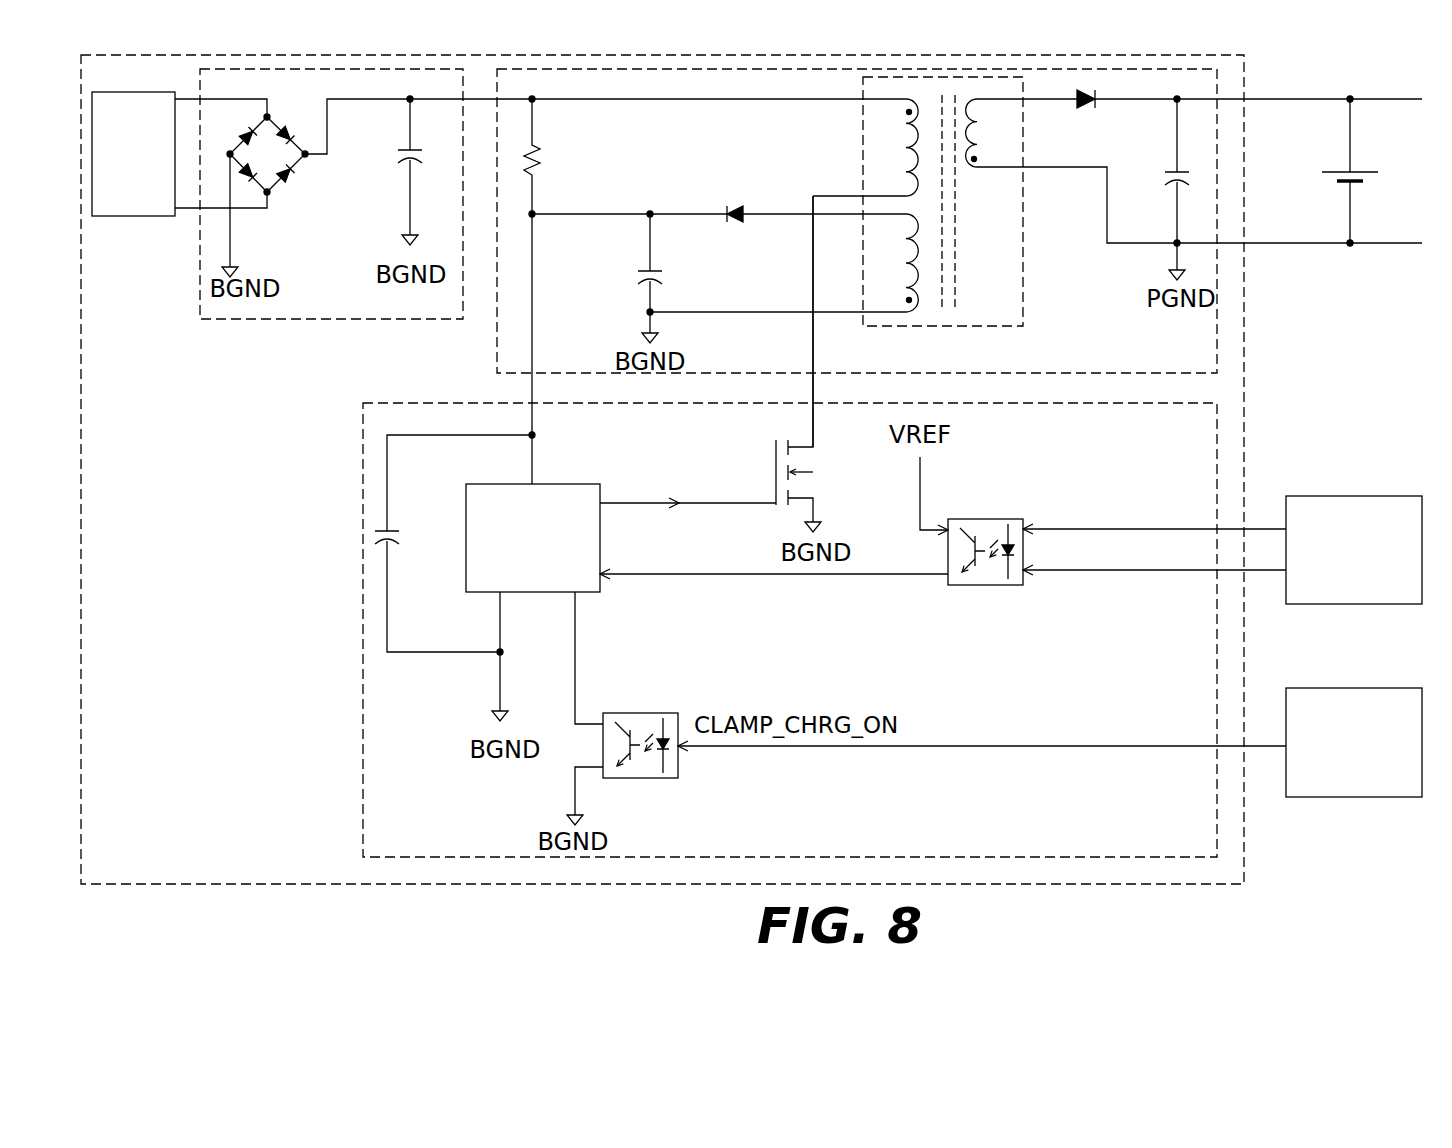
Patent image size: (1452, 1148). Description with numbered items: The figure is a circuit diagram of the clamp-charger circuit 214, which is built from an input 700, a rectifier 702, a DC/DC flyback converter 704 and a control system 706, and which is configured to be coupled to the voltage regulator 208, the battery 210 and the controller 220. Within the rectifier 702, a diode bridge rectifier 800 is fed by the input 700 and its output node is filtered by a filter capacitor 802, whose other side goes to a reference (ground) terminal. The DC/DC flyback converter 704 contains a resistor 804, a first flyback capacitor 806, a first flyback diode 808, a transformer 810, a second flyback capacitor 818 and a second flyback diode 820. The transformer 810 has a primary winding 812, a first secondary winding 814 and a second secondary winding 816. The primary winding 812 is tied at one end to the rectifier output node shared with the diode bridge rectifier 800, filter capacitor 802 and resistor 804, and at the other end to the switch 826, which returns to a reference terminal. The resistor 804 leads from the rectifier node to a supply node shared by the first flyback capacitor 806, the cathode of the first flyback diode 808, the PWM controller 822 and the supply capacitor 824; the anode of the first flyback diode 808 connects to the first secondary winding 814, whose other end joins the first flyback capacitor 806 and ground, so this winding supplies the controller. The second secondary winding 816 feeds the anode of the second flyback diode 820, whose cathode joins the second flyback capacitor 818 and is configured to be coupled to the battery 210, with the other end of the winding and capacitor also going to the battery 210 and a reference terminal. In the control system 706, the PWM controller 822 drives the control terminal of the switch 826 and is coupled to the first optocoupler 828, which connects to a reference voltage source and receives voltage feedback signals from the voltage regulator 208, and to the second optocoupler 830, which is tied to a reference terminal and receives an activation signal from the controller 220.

The clamp-charger circuit 214 is at (283, 886).
The input 700 is at (172, 217).
The rectifier 702 is at (222, 322).
The DC/DC flyback converter 704 is at (496, 371).
The control system 706 is at (360, 657).
The diode bridge rectifier 800 is at (293, 208).
The filter capacitor 802 is at (408, 158).
The resistor 804 is at (541, 160).
The first flyback capacitor 806 is at (647, 270).
The first flyback diode 808 is at (736, 208).
The transformer 810 is at (949, 225).
The primary winding 812 is at (900, 101).
The first secondary winding 814 is at (908, 313).
The second secondary winding 816 is at (985, 170).
The second flyback capacitor 818 is at (1172, 172).
The second flyback diode 820 is at (1086, 108).
The Pulse Width Modulation (PWM) controller 822 is at (601, 593).
The supply capacitor 824 is at (380, 528).
The switch 826 is at (775, 476).
The first optocoupler 828 is at (980, 519).
The second optocoupler 830 is at (679, 779).
The battery 210 is at (1342, 170).
The voltage regulator 208 is at (1328, 496).
The controller 220 is at (1328, 688).